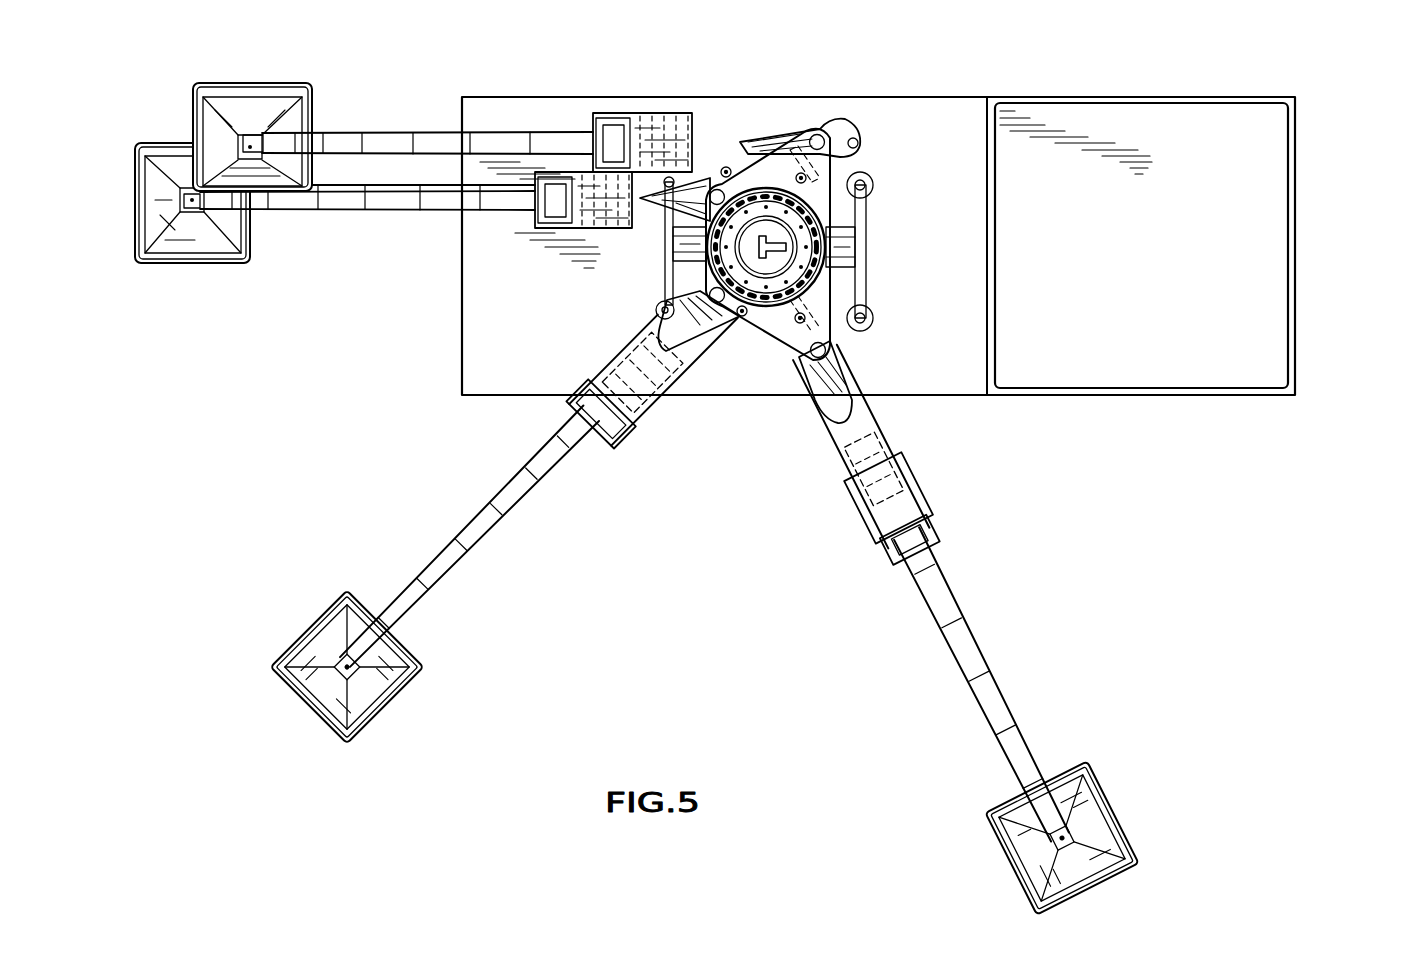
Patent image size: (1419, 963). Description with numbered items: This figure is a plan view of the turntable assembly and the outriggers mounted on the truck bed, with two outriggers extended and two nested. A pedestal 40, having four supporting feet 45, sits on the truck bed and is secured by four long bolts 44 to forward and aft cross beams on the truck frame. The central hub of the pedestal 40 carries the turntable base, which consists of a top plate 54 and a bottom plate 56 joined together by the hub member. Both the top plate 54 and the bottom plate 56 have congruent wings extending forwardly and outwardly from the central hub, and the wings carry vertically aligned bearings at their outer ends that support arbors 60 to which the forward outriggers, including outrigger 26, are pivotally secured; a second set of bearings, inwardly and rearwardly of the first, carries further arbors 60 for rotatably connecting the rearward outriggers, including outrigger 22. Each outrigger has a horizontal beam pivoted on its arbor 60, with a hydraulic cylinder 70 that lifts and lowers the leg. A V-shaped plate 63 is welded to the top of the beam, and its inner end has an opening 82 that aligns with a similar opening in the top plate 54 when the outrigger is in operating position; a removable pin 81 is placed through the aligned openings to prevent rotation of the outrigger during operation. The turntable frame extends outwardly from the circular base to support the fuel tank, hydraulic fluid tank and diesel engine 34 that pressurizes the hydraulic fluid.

The outrigger 22 is at (524, 470).
The outrigger 26 is at (952, 583).
The diesel engine 34 is at (1262, 301).
The pedestal 40 is at (845, 243).
The long bolt 44 is at (872, 188).
The supporting foot 45 is at (874, 185).
The top plate 54 is at (778, 322).
The bottom plate 56 is at (808, 298).
The arbor 60 is at (709, 189).
The V-shaped plate 63 is at (826, 385).
The hydraulic cylinder 70 is at (645, 393).
The removable pin 81 is at (853, 136).
The opening 82 is at (728, 167).